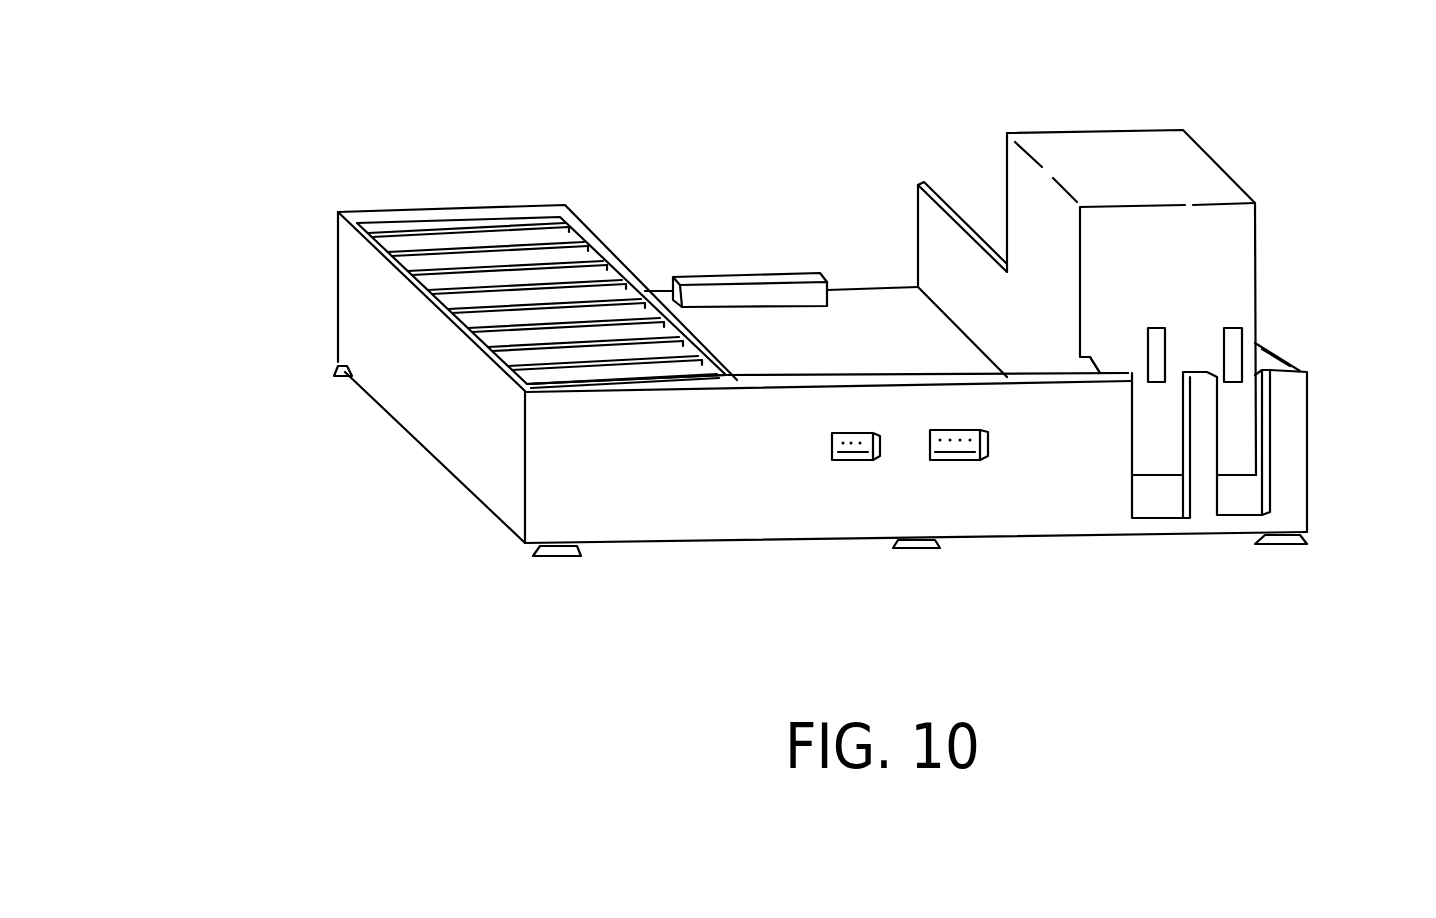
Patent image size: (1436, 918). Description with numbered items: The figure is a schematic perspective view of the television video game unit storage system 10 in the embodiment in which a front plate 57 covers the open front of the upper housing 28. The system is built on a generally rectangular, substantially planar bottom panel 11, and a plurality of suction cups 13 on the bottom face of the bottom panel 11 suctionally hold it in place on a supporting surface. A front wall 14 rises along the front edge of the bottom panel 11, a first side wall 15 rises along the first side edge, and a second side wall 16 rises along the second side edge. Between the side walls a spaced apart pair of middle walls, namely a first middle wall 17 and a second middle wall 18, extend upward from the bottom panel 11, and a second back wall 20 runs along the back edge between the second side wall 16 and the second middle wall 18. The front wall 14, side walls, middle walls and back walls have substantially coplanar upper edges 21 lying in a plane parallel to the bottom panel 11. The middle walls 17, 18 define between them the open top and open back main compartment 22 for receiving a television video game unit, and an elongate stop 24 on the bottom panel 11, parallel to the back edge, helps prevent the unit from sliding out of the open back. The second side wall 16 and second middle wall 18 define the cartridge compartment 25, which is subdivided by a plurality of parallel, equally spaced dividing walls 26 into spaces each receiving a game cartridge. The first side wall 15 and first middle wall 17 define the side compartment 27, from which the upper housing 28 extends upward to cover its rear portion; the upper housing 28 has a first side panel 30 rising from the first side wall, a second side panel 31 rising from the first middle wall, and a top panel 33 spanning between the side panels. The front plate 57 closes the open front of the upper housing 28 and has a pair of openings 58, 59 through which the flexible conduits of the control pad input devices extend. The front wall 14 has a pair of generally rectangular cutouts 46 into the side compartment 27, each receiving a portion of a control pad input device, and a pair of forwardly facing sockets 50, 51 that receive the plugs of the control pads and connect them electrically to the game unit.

The television video game unit storage system 10 is at (250, 181).
The bottom panel 11 is at (840, 285).
The suction cups 13 is at (337, 378).
The front wall 14 is at (680, 540).
The first side wall 15 is at (1293, 365).
The second side wall 16 is at (447, 435).
The first middle wall 17 is at (917, 220).
The second middle wall 18 is at (583, 240).
The second back wall 20 is at (400, 210).
The upper edges 21 is at (363, 235).
The main compartment 22 is at (705, 240).
The stop 24 is at (747, 275).
The cartridge compartment 25 is at (358, 193).
The dividing walls 26 is at (490, 263).
The side compartment 27 is at (1302, 340).
The upper housing 28 is at (1191, 113).
The first side panel 30 is at (1255, 202).
The second side panel 31 is at (1023, 185).
The top panel 33 is at (1050, 143).
The cutouts 46 is at (1230, 518).
The first socket 50 is at (842, 460).
The second socket 51 is at (957, 460).
The front plate 57 is at (1233, 223).
The first opening 58 is at (1162, 328).
The second opening 59 is at (1240, 330).